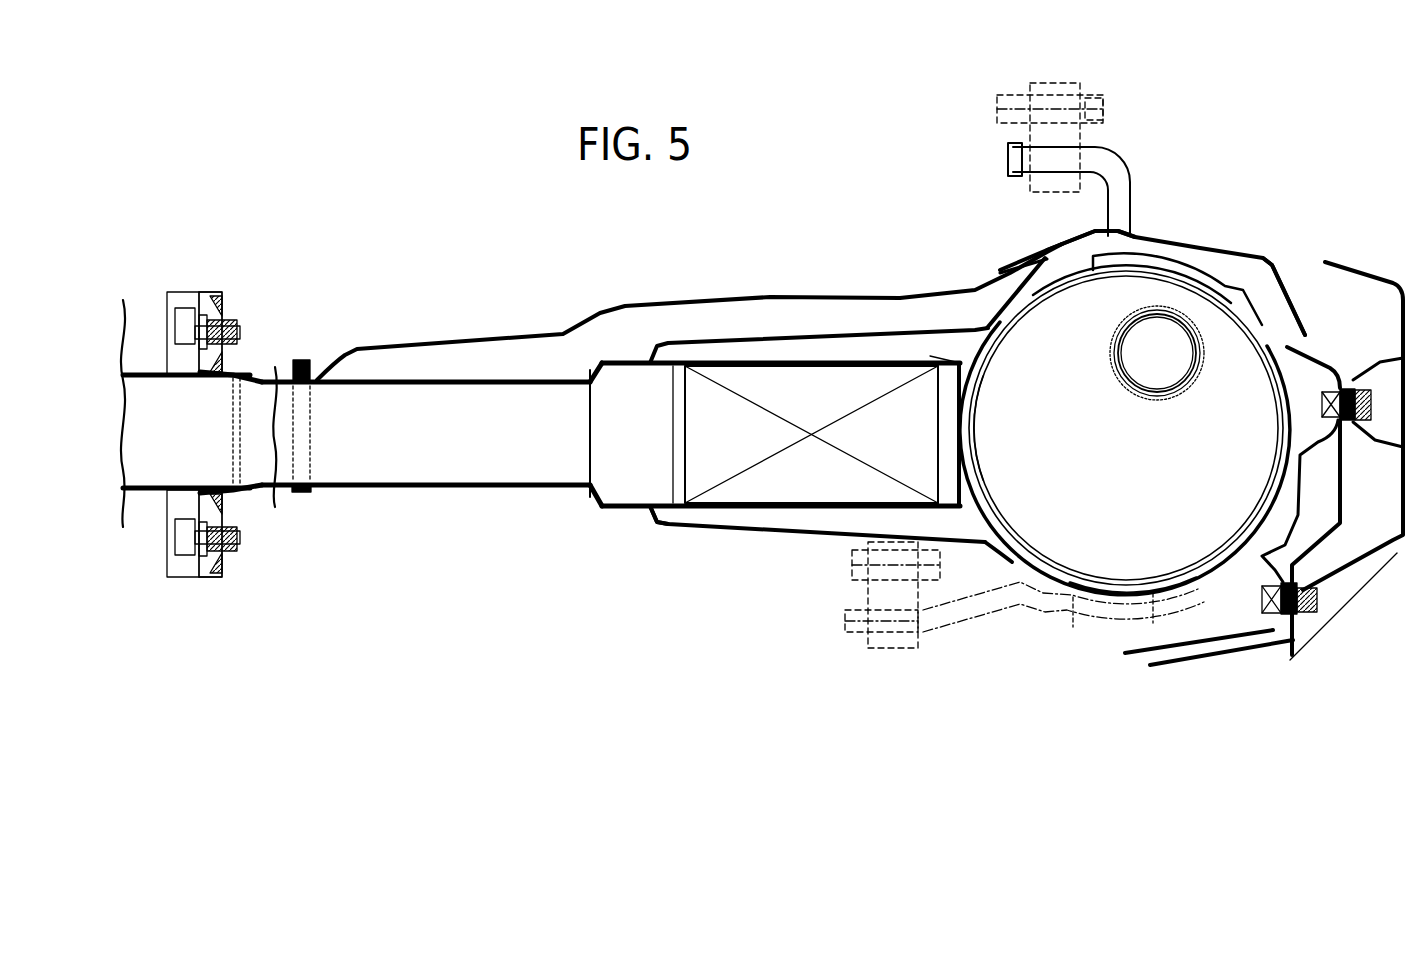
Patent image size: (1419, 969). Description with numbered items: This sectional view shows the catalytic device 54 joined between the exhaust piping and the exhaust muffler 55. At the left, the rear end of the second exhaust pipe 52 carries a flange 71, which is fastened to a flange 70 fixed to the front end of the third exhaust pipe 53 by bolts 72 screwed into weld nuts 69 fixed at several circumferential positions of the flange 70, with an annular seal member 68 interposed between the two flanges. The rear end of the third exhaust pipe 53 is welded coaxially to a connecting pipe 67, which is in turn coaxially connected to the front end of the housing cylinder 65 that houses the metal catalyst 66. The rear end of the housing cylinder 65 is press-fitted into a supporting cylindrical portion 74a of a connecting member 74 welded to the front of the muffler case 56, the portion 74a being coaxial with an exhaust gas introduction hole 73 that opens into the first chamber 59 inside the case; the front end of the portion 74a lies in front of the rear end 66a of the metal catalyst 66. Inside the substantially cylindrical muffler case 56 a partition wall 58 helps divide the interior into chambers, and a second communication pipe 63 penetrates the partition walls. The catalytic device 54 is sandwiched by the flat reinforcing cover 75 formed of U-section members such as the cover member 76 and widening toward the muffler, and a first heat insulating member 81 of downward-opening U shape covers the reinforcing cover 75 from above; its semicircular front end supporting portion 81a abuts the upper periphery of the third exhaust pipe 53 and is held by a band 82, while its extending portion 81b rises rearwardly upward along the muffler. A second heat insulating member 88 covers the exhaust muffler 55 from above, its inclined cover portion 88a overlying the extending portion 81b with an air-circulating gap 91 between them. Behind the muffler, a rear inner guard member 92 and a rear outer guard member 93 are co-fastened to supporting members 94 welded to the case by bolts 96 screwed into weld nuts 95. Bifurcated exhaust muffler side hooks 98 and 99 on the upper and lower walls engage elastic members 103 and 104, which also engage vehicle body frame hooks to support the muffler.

The second exhaust pipe 52 is at (146, 373).
The third exhaust pipe 53 is at (450, 488).
The catalytic device 54 is at (800, 355).
The exhaust muffler 55 is at (1267, 328).
The muffler case 56 is at (1083, 597).
The partition wall 58 is at (1018, 305).
The first chamber 59 is at (1101, 492).
The second communication pipe 63 is at (1165, 398).
The housing cylinder 65 is at (850, 360).
The metal catalyst 66 is at (720, 370).
The rear end 66a is at (963, 456).
The connecting pipe 67 is at (593, 502).
The annular seal member 68 is at (235, 372).
The weld nuts 69 is at (220, 320).
The flange 70 is at (210, 578).
The flange 71 is at (186, 578).
The bolts 72 is at (185, 308).
The exhaust gas introduction hole 73 is at (978, 388).
The connecting member 74 is at (996, 548).
The supporting cylindrical portion 74a is at (937, 357).
The reinforcing cover 75 is at (762, 533).
The cover member 76 is at (662, 526).
The first heat insulating member 81 is at (615, 308).
The front end supporting portion 81a is at (305, 382).
The extending portion 81b is at (1000, 268).
The band 82 is at (301, 492).
The second heat insulating member 88 is at (1205, 246).
The cover portion 88a is at (1035, 243).
The gap 91 is at (1035, 279).
The rear inner guard member 92 is at (1325, 362).
The rear outer guard member 93 is at (1368, 265).
The supporting members 94 is at (1340, 503).
The weld nuts 95 is at (1322, 400).
The bolts 96 is at (1363, 390).
The exhaust muffler side hook 98 is at (1090, 150).
The exhaust muffler side hook 99 is at (848, 622).
The elastic member 103 is at (1055, 80).
The elastic member 104 is at (893, 650).